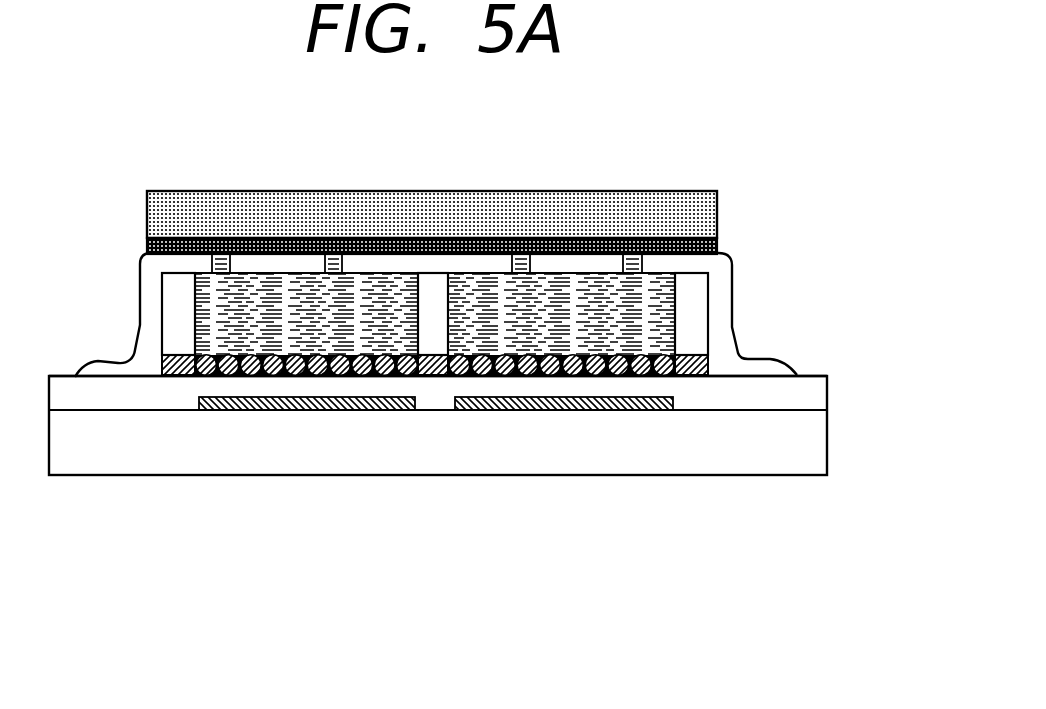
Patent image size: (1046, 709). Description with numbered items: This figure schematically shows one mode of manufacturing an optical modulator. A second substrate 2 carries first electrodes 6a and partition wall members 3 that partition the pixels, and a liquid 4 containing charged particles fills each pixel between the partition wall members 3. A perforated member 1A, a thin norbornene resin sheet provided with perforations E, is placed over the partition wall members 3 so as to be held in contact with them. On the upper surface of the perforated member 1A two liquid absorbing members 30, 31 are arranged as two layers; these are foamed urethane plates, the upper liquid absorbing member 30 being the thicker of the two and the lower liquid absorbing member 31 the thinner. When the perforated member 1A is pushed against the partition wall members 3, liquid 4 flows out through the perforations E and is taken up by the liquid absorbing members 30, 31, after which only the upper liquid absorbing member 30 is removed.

The second substrate 2 is at (807, 442).
The first electrodes 6a is at (558, 411).
The perforated member 1A is at (722, 325).
The partition wall members 3 is at (173, 312).
The liquid 4 is at (375, 306).
The perforations E is at (522, 262).
The liquid absorbing member (upper layer) 30 is at (207, 217).
The liquid absorbing member (lower layer) 31 is at (720, 242).